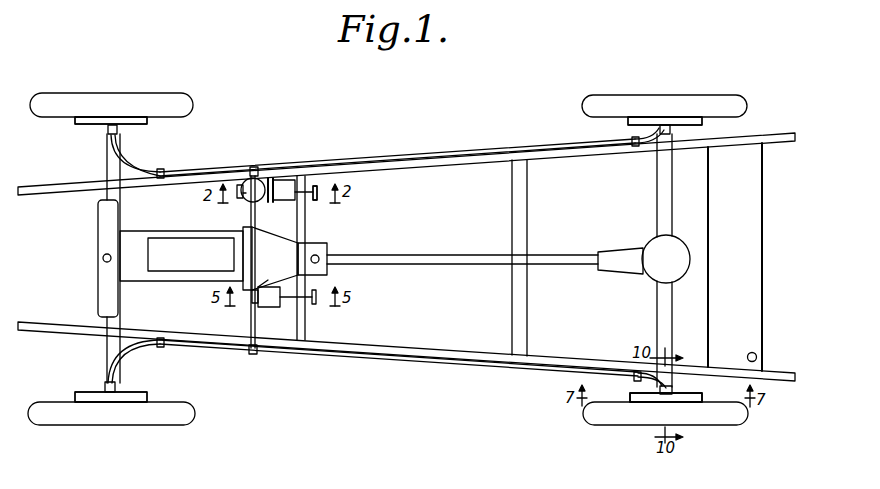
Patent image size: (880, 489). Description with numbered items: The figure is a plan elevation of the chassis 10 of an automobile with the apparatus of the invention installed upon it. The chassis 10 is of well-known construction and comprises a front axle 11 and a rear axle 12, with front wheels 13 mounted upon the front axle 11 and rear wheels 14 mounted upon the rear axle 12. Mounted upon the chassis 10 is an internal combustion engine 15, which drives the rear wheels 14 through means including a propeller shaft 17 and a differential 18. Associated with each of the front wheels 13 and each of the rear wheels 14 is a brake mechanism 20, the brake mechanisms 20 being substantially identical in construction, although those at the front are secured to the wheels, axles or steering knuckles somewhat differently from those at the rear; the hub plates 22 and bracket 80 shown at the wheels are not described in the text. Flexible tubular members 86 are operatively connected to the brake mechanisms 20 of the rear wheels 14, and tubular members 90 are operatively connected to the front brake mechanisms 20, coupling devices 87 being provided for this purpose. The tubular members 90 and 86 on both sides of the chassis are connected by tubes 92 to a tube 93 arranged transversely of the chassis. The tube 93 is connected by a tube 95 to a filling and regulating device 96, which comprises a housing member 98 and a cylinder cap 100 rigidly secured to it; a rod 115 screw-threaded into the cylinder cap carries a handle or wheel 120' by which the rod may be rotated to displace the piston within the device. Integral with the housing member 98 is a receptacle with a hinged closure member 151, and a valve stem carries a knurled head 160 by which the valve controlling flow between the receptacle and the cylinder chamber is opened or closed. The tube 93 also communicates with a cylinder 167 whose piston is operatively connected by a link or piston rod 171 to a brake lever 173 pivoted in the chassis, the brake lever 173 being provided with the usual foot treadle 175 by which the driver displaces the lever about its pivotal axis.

The chassis 10 is at (425, 160).
The front axle 11 is at (104, 193).
The rear axle 12 is at (662, 207).
The front wheels 13 is at (94, 103).
The rear wheels 14 is at (667, 101).
The internal combustion engine 15 is at (132, 232).
The propeller shaft 17 is at (368, 262).
The differential 18 is at (658, 247).
The brake mechanism 20 is at (150, 121).
The wheel hub plate 22 is at (132, 111).
The bracket 80 is at (638, 399).
The flexible tubular member 86 is at (670, 138).
The coupling device 87 is at (107, 132).
The tubular member 90 is at (137, 163).
The tube 92 is at (345, 163).
The tube 93 is at (251, 203).
The tube 95 is at (242, 196).
The filling and regulating device 96 is at (276, 179).
The housing member 98 is at (269, 178).
The cylinder cap 100 is at (283, 201).
The rod 115 is at (305, 197).
The handle or wheel 120' is at (341, 202).
The hinged closure member 151 is at (244, 182).
The knurled head 160 is at (238, 190).
The cylinder 167 is at (254, 304).
The link or piston rod 171 is at (285, 288).
The brake lever 173 is at (268, 303).
The foot treadle 175 is at (314, 303).